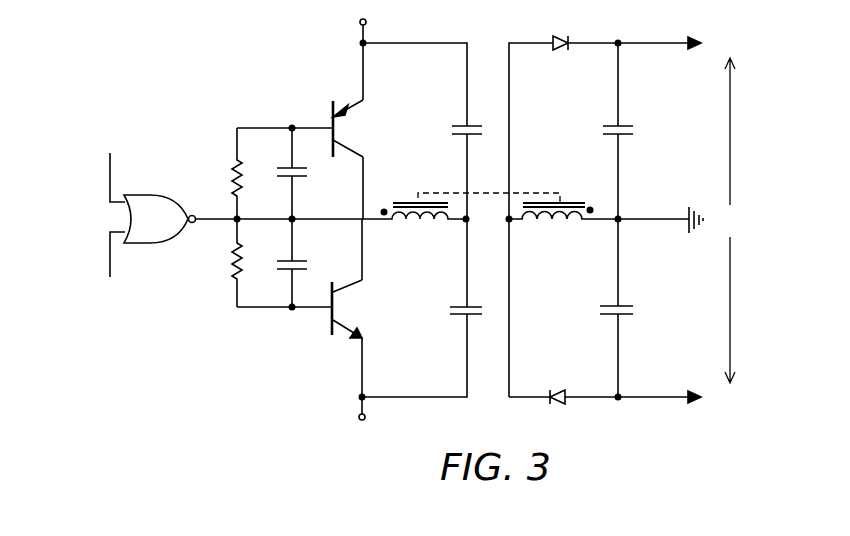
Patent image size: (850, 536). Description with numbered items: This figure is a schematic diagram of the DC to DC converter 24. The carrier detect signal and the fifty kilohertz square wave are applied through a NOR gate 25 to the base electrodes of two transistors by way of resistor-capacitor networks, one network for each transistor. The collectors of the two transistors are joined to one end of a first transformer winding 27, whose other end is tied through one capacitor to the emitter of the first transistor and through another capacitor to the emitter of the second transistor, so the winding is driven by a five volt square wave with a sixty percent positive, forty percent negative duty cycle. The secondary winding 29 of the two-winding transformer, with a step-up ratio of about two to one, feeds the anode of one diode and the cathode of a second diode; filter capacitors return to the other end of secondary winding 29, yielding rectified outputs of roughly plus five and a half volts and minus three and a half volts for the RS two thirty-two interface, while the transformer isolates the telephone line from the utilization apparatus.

The DC to DC converter 24 is at (434, 220).
The NOR gate 25 is at (177, 223).
The first transformer winding 27 is at (427, 227).
The secondary winding 29 is at (548, 225).